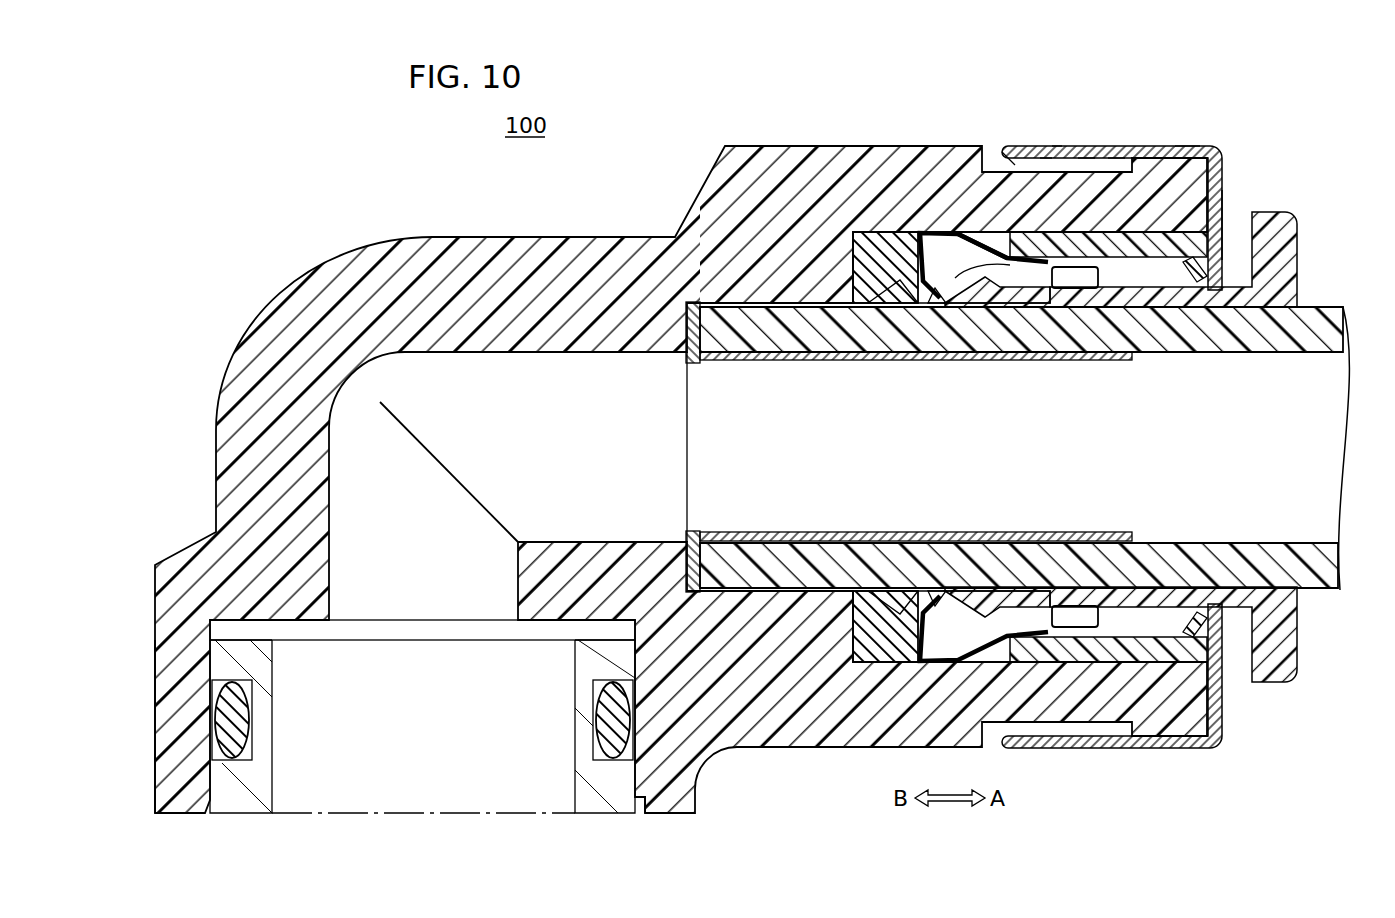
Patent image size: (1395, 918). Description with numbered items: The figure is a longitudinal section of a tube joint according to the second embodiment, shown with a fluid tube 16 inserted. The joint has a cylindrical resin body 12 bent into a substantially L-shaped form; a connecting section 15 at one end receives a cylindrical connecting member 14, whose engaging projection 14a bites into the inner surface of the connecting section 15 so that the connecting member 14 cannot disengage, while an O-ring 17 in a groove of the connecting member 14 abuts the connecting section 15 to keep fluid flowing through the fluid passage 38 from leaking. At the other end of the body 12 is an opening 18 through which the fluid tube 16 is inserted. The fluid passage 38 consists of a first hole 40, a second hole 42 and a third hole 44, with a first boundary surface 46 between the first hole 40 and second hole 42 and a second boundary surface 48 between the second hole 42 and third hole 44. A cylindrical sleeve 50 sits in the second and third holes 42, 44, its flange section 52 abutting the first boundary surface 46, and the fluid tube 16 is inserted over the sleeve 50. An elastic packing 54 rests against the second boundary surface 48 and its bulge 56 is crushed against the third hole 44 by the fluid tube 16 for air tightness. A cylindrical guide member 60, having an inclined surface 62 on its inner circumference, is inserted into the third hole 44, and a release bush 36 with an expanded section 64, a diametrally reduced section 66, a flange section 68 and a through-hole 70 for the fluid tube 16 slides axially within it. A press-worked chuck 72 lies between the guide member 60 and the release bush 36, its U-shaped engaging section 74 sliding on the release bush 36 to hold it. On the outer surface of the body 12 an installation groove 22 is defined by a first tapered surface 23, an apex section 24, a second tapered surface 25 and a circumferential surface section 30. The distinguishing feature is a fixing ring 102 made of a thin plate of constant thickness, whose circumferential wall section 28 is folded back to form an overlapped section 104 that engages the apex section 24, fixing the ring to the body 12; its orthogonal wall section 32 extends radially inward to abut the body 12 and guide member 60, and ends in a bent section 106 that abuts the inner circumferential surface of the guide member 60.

The body 12 is at (744, 145).
The connecting member 14 is at (408, 638).
The engaging projection 14a is at (645, 795).
The connecting section 15 is at (162, 684).
The fluid tube 16 is at (1322, 304).
The O-ring 17 is at (240, 718).
The opening 18 is at (1254, 690).
The installation groove 22 is at (1015, 163).
The first tapered surface 23 is at (1186, 148).
The apex section 24 is at (1152, 155).
The second tapered surface 25 is at (1116, 157).
The circumferential wall section 28 is at (1056, 146).
The circumferential surface section 30 is at (1046, 158).
The orthogonal wall section 32 is at (1225, 212).
The release bush 36 is at (1302, 262).
The fluid passage 38 is at (365, 422).
The first hole 40 is at (490, 358).
The second hole 42 is at (772, 312).
The third hole 44 is at (963, 232).
The first boundary surface 46 is at (692, 532).
The second boundary surface 48 is at (860, 590).
The sleeve 50 is at (1083, 364).
The flange section 52 is at (688, 346).
The packing 54 is at (903, 302).
The bulge 56 is at (870, 232).
The guide member 60 is at (1168, 248).
The inclined surface 62 is at (953, 232).
The expanded section 64 is at (1025, 292).
The diametrally reduced section 66 is at (978, 292).
The flange section 68 is at (1293, 645).
The through-hole 70 is at (1332, 580).
The chuck 72 is at (940, 304).
The engaging section 74 is at (1098, 276).
The fixing ring 102 is at (1228, 161).
The overlapped section 104 is at (1086, 158).
The bent section 106 is at (1210, 263).